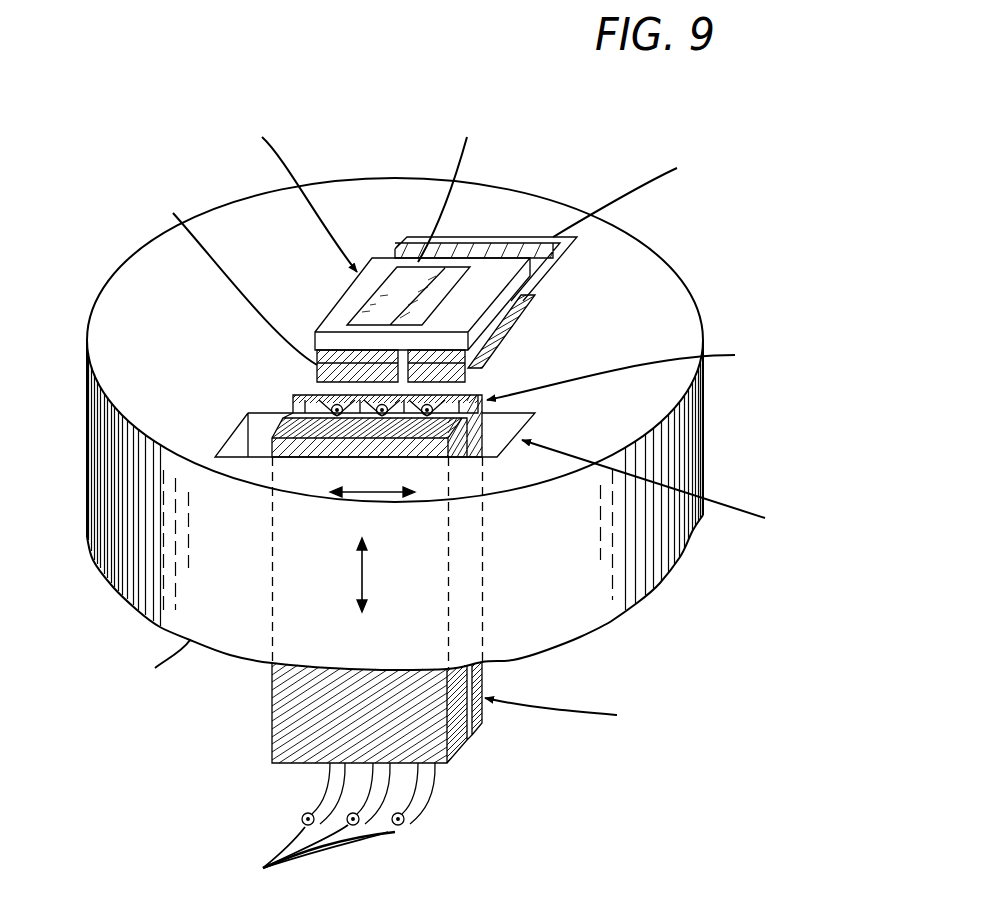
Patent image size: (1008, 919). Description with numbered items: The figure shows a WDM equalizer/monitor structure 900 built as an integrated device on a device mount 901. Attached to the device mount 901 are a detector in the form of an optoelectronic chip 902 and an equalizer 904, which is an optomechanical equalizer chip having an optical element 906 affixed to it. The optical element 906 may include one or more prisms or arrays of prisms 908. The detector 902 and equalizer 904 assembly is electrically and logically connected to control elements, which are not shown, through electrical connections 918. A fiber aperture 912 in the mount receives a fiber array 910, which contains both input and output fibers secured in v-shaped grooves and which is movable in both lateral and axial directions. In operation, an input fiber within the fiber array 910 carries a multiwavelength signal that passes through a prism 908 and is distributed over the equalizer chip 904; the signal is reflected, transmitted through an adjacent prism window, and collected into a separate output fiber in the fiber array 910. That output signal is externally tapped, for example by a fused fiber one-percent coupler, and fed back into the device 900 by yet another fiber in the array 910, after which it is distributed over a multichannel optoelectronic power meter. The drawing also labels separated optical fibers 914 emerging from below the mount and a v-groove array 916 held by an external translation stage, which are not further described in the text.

The WDM equalizer/monitor structure 900 is at (676, 84).
The device mount 901 is at (640, 237).
The detector (optoelectronic chip) 902 is at (485, 353).
The equalizer (optomechanical equalizer chip) 904 is at (317, 370).
The optical element 906 is at (333, 310).
The prism 908 is at (407, 280).
The fiber array 910 is at (296, 400).
The fiber aperture 912 is at (497, 443).
The separated optical fibers 914 is at (330, 790).
The V-groove array held by external translation stage 916 is at (475, 725).
The electrical connections 918 is at (468, 243).